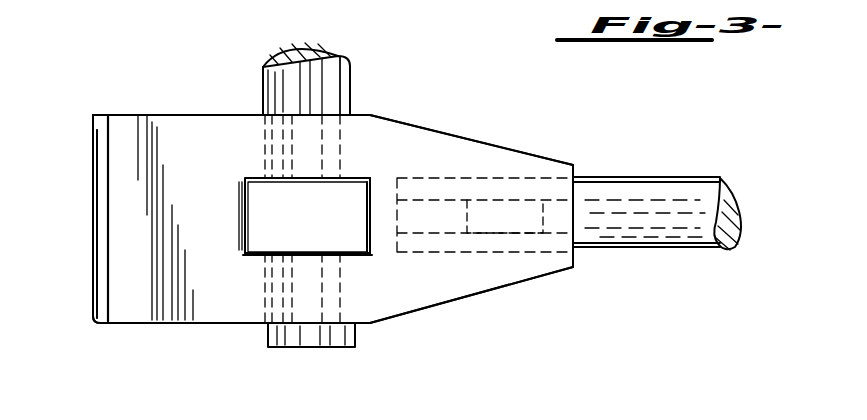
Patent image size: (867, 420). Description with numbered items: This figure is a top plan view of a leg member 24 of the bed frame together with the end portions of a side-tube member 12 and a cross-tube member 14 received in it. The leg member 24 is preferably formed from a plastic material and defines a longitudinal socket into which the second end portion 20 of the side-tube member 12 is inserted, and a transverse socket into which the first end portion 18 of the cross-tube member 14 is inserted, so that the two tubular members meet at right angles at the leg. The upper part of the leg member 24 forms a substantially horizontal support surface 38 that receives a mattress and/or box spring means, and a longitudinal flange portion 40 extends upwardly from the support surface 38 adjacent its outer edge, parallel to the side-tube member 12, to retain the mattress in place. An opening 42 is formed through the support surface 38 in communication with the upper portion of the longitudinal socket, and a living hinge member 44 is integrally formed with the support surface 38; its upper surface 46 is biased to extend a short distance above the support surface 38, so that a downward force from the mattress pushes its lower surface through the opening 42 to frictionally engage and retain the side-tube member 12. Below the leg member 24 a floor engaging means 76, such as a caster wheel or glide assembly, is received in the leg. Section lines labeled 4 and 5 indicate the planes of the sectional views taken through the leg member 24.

The side-tube member 12 is at (342, 52).
The cross-tube member 14 is at (704, 170).
The first end portion of cross-tube member 18 is at (618, 190).
The second end portion of side-tube member 20 is at (337, 103).
The leg member 24 is at (486, 134).
The support surface 38 is at (176, 137).
The longitudinal flange portion 40 is at (108, 273).
The opening 42 is at (370, 232).
The living hinge member 44 is at (272, 257).
The upper surface of living hinge member 46 is at (333, 203).
The floor engaging means 76 is at (166, 0).
The section line 4- 4 is at (468, 52).
The section line 5- 5 is at (46, 170).